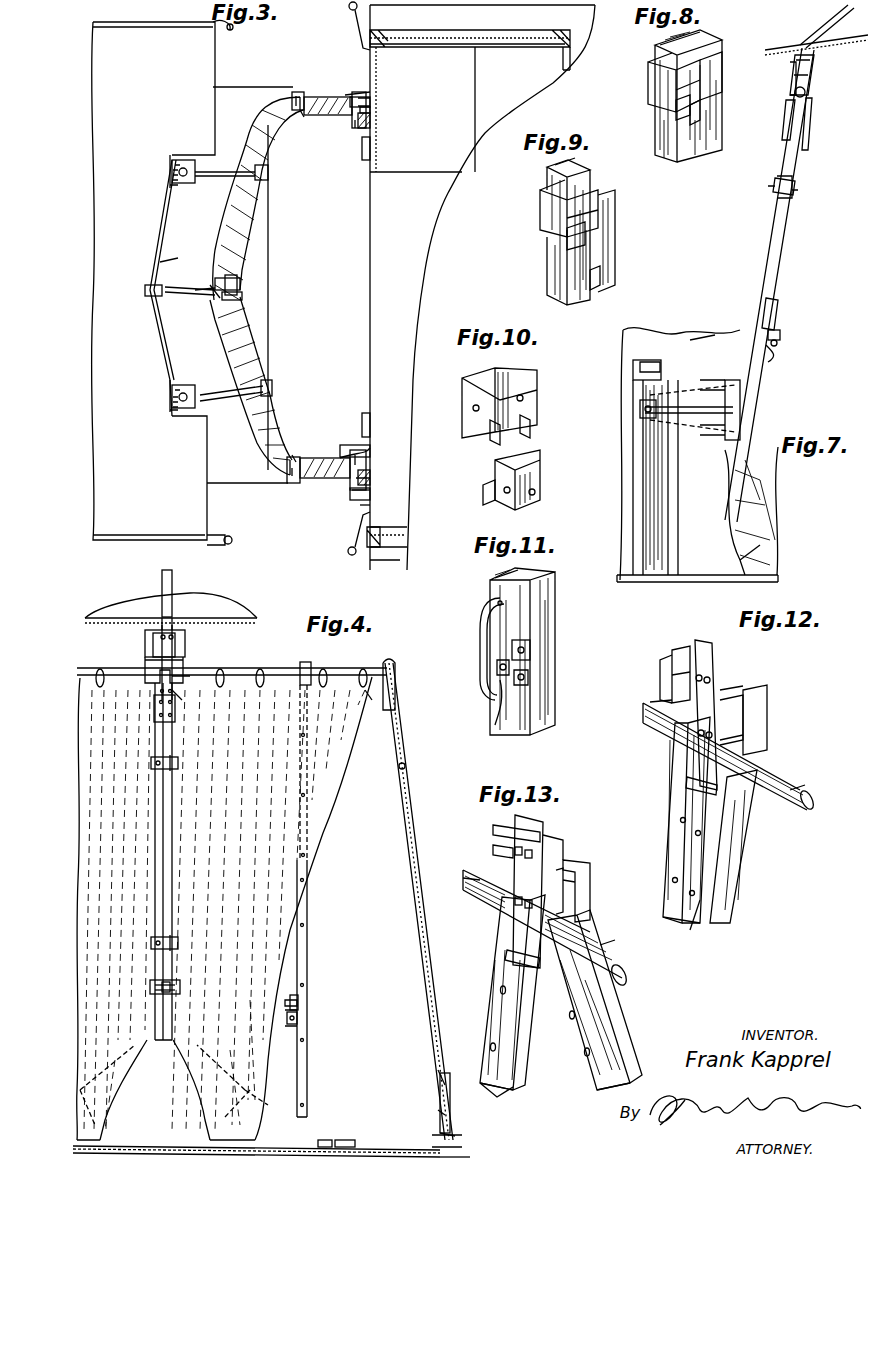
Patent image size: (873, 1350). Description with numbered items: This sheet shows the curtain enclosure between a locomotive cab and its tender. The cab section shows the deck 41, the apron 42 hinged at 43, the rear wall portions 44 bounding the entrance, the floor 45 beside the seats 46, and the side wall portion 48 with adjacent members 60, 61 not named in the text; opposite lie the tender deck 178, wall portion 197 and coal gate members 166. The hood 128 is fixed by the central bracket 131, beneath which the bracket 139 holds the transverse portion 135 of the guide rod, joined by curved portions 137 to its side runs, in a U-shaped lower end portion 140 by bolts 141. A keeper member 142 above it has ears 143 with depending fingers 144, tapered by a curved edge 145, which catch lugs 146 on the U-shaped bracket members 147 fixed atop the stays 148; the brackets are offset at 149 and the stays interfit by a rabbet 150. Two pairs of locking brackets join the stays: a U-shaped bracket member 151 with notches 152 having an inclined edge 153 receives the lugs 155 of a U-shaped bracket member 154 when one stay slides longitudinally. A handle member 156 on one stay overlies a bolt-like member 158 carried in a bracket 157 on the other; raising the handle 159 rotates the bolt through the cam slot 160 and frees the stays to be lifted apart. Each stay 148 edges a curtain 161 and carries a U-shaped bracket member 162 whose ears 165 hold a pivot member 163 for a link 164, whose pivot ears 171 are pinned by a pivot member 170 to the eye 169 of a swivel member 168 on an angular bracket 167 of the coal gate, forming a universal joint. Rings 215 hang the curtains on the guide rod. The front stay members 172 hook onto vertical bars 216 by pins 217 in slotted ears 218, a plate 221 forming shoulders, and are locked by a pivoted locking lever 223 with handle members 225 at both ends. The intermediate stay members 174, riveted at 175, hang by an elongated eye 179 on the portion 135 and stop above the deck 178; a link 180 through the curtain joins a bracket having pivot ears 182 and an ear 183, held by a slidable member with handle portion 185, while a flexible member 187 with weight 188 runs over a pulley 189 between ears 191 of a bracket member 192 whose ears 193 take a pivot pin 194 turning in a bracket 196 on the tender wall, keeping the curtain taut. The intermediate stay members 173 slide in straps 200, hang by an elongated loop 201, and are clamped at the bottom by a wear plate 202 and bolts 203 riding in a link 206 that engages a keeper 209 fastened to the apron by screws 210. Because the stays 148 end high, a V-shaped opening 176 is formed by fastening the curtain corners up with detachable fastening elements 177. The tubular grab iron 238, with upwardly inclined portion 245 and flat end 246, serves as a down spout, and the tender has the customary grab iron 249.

In FIG. 3, the deck 41 is at (386, 246).
In FIG. 3, the apron 42 is at (328, 300).
In FIG. 4, the apron 42 is at (345, 1140).
In FIG. 7, the apron 42 is at (750, 546).
In FIG. 3, the hinge 43 is at (370, 147).
In FIG. 4, the hinge 43 is at (325, 1140).
In FIG. 3, the rear wall portions 44 is at (370, 100).
In FIG. 3, the floor 45 is at (497, 109).
In FIG. 3, the seats 46 is at (425, 172).
In FIG. 3, the side wall portion 48 is at (410, 30).
In FIG. 3, the frame rail 60 is at (445, 38).
In FIG. 3, the frame rail 61 is at (490, 36).
In FIG. 4, the hood 128 is at (185, 612).
In FIG. 7, the hood 128 is at (775, 50).
In FIG. 4, the bracket 131 is at (174, 600).
In FIG. 7, the bracket 131 is at (828, 22).
In FIG. 4, the rear transversely extending portion 135 is at (180, 690).
In FIG. 7, the rear transversely extending portion 135 is at (806, 92).
In FIG. 4, the curved portions 137 is at (368, 692).
In FIG. 4, the bracket 139 is at (177, 640).
In FIG. 7, the bracket 139 is at (790, 72).
In FIG. 12, the bracket 139 is at (714, 660).
In FIG. 13, the bracket 139 is at (543, 838).
In FIG. 12, the U-shaped lower end portion 140 is at (745, 720).
In FIG. 13, the U-shaped lower end portion 140 is at (590, 880).
In FIG. 4, the bolts 141 is at (160, 691).
In FIG. 12, the bolts 141 is at (713, 690).
In FIG. 13, the bolts 141 is at (515, 900).
In FIG. 4, the keeper member 142 is at (162, 600).
In FIG. 12, the keeper member 142 is at (670, 668).
In FIG. 13, the keeper member 142 is at (558, 855).
In FIG. 4, the ears 143 is at (147, 632).
In FIG. 7, the ears 143 is at (814, 65).
In FIG. 12, the ears 143 is at (678, 650).
In FIG. 13, the ears 143 is at (495, 825).
In FIG. 4, the depending fingers 144 is at (145, 650).
In FIG. 7, the depending fingers 144 is at (810, 78).
In FIG. 12, the depending fingers 144 is at (680, 688).
In FIG. 13, the depending fingers 144 is at (493, 850).
In FIG. 12, the curved edge 145 is at (648, 702).
In FIG. 13, the curved edge 145 is at (470, 880).
In FIG. 4, the lugs 146 is at (160, 625).
In FIG. 12, the lugs 146 is at (645, 714).
In FIG. 13, the lugs 146 is at (463, 870).
In FIG. 4, the U-shaped bracket members 147 is at (155, 720).
In FIG. 7, the U-shaped bracket members 147 is at (786, 110).
In FIG. 12, the U-shaped bracket members 147 is at (675, 752).
In FIG. 13, the U-shaped bracket members 147 is at (495, 1005).
In FIG. 3, the stays 148 is at (238, 285).
In FIG. 4, the stays 148 is at (155, 860).
In FIG. 8, the stays 148 is at (655, 45).
In FIG. 9, the stays 148 is at (547, 170).
In FIG. 11, the stays 148 is at (490, 580).
In FIG. 7, the stays 148 is at (785, 236).
In FIG. 12, the stays 148 is at (668, 898).
In FIG. 13, the stays 148 is at (482, 1070).
In FIG. 4, the offset 149 is at (145, 665).
In FIG. 12, the offset 149 is at (672, 795).
In FIG. 13, the offset 149 is at (500, 955).
In FIG. 8, the rabbet 150 is at (655, 50).
In FIG. 9, the rabbet 150 is at (572, 165).
In FIG. 11, the rabbet 150 is at (495, 585).
In FIG. 12, the rabbet 150 is at (687, 782).
In FIG. 13, the rabbet 150 is at (505, 956).
In FIG. 3, the U-shaped bracket member 151 is at (240, 282).
In FIG. 4, the U-shaped bracket member 151 is at (151, 762).
In FIG. 8, the U-shaped bracket member 151 is at (648, 80).
In FIG. 9, the U-shaped bracket member 151 is at (540, 212).
In FIG. 10, the U-shaped bracket member 151 is at (530, 368).
In FIG. 7, the U-shaped bracket member 151 is at (773, 182).
In FIG. 8, the notches 152 is at (676, 92).
In FIG. 9, the notches 152 is at (598, 216).
In FIG. 10, the notches 152 is at (520, 428).
In FIG. 8, the inclined edge 153 is at (676, 110).
In FIG. 9, the inclined edge 153 is at (567, 238).
In FIG. 10, the inclined edge 153 is at (490, 425).
In FIG. 3, the U-shaped bracket member 154 is at (243, 296).
In FIG. 4, the U-shaped bracket member 154 is at (178, 763).
In FIG. 8, the U-shaped bracket member 154 is at (718, 95).
In FIG. 9, the U-shaped bracket member 154 is at (615, 255).
In FIG. 10, the U-shaped bracket member 154 is at (540, 500).
In FIG. 7, the U-shaped bracket member 154 is at (792, 180).
In FIG. 8, the lugs 155 is at (700, 115).
In FIG. 9, the lugs 155 is at (600, 280).
In FIG. 10, the lugs 155 is at (483, 492).
In FIG. 7, the lugs 155 is at (768, 188).
In FIG. 11, the handle member 156 is at (484, 625).
In FIG. 7, the handle member 156 is at (778, 310).
In FIG. 11, the bracket 157 is at (530, 652).
In FIG. 7, the bracket 157 is at (780, 335).
In FIG. 11, the bolt-like member 158 is at (497, 670).
In FIG. 7, the bolt-like member 158 is at (778, 345).
In FIG. 11, the handle 159 is at (497, 705).
In FIG. 7, the handle 159 is at (776, 360).
In FIG. 11, the cam slot 160 is at (530, 645).
In FIG. 3, the curtains 161 is at (262, 208).
In FIG. 4, the curtains 161 is at (224, 908).
In FIG. 7, the curtains 161 is at (778, 548).
In FIG. 4, the U-shaped bracket members 162 is at (152, 982).
In FIG. 7, the U-shaped bracket members 162 is at (745, 395).
In FIG. 3, the pivot member 163 is at (205, 288).
In FIG. 4, the pivot member 163 is at (172, 985).
In FIG. 7, the pivot member 163 is at (708, 338).
In FIG. 3, the link 164 is at (200, 292).
In FIG. 4, the link 164 is at (170, 988).
In FIG. 7, the link 164 is at (705, 390).
In FIG. 3, the ears 165 is at (210, 287).
In FIG. 4, the ears 165 is at (153, 988).
In FIG. 7, the ears 165 is at (710, 380).
In FIG. 3, the coal gate members 166 is at (160, 224).
In FIG. 7, the coal gate members 166 is at (633, 378).
In FIG. 3, the angular bracket 167 is at (165, 262).
In FIG. 7, the angular bracket 167 is at (640, 360).
In FIG. 3, the swivel member 168 is at (145, 292).
In FIG. 7, the swivel member 168 is at (656, 372).
In FIG. 7, the eye 169 is at (645, 412).
In FIG. 7, the pivot member 170 is at (640, 408).
In FIG. 7, the pivot ears 171 is at (655, 477).
In FIG. 3, the front stay members 172 is at (370, 109).
In FIG. 3, the intermediate stay members 173 is at (302, 112).
In FIG. 4, the intermediate stay members 173 is at (405, 805).
In FIG. 3, the intermediate stay members 174 is at (268, 177).
In FIG. 4, the intermediate stay members 174 is at (308, 890).
In FIG. 4, the rivets 175 is at (308, 740).
In FIG. 4, the V-shaped opening 176 is at (190, 1150).
In FIG. 4, the detachable fastening elements 177 is at (125, 1055).
In FIG. 3, the deck 178 is at (230, 92).
In FIG. 4, the deck 178 is at (470, 1157).
In FIG. 7, the deck 178 is at (660, 582).
In FIG. 4, the elongated eye 179 is at (306, 662).
In FIG. 3, the link 180 is at (266, 168).
In FIG. 4, the link 180 is at (287, 1018).
In FIG. 4, the pivot ears 182 is at (285, 1010).
In FIG. 4, the ear 183 is at (285, 1002).
In FIG. 4, the handle portion 185 is at (300, 996).
In FIG. 3, the flexible member 187 is at (215, 178).
In FIG. 3, the weight 188 is at (183, 160).
In FIG. 3, the pulley 189 is at (190, 168).
In FIG. 3, the ears 191 is at (195, 165).
In FIG. 3, the bracket member 192 is at (170, 180).
In FIG. 3, the ears 193 is at (176, 163).
In FIG. 3, the pivot pin 194 is at (174, 170).
In FIG. 3, the bracket 196 is at (175, 172).
In FIG. 3, the wall portion 197 is at (173, 178).
In FIG. 4, the straps 200 is at (400, 768).
In FIG. 4, the elongated loop 201 is at (390, 712).
In FIG. 4, the wear plate 202 is at (438, 1075).
In FIG. 4, the bolts 203 is at (438, 1112).
In FIG. 3, the link 206 is at (293, 95).
In FIG. 4, the link 206 is at (450, 1100).
In FIG. 3, the keeper 209 is at (298, 92).
In FIG. 4, the keeper 209 is at (458, 1136).
In FIG. 4, the screws 210 is at (432, 1138).
In FIG. 4, the rings 215 is at (102, 684).
In FIG. 3, the vertically extending bars 216 is at (370, 120).
In FIG. 3, the pin 217 is at (358, 92).
In FIG. 3, the ear 218 is at (356, 98).
In FIG. 3, the plate 221 is at (354, 123).
In FIG. 3, the pivoted locking lever 223 is at (383, 92).
In FIG. 3, the handle members 225 is at (345, 97).
In FIG. 3, the grab iron 238 is at (350, 6).
In FIG. 3, the upwardly inclined portion 245 is at (362, 507).
In FIG. 3, the flat end 246 is at (350, 492).
In FIG. 3, the grab iron 249 is at (230, 32).